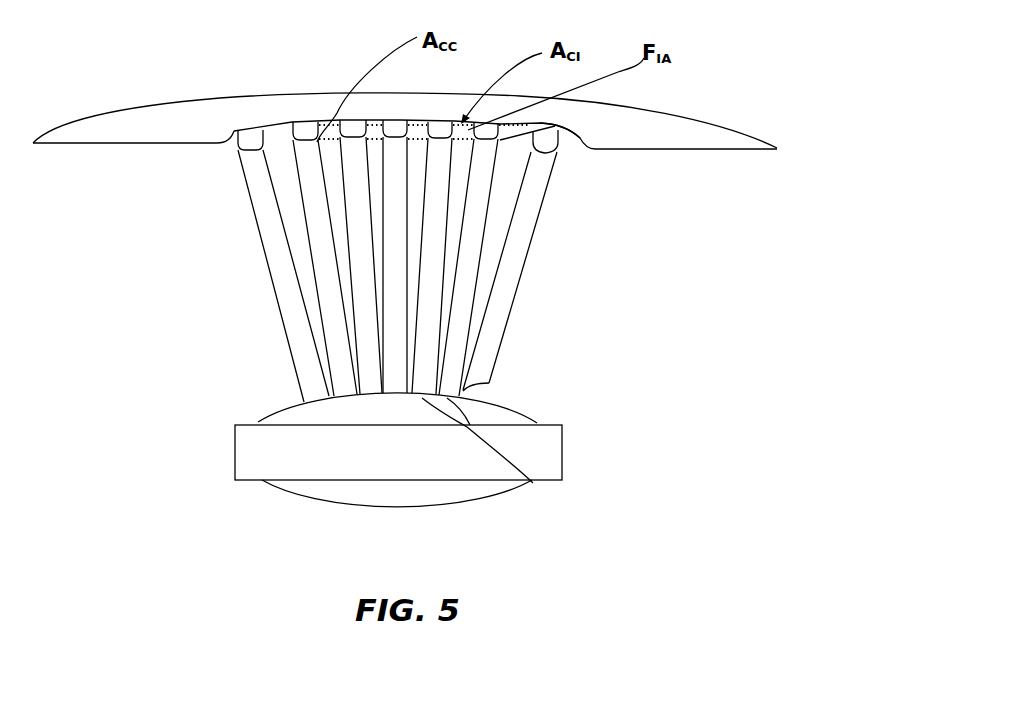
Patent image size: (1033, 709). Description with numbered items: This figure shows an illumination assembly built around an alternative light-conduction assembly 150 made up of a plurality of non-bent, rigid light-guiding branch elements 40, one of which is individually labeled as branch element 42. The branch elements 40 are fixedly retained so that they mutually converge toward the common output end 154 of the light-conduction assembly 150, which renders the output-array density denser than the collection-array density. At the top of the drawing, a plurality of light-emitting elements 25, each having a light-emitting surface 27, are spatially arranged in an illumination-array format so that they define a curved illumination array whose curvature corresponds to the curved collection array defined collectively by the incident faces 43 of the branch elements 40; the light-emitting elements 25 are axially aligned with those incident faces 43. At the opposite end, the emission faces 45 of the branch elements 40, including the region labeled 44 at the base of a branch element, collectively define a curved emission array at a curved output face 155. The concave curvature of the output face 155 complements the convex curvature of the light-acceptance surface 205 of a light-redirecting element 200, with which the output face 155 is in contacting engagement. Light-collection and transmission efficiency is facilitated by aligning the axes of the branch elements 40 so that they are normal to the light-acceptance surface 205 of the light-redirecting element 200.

The light-emitting element 25 is at (247, 143).
The light-emitting surface 27 is at (316, 145).
The light-guiding branch element 40 is at (473, 248).
The light-guiding branch element 42 is at (542, 160).
The incident face 43 is at (560, 151).
The light-guiding branch element 44 is at (473, 387).
The emission face 45 is at (452, 396).
The light-conduction assembly 150 is at (210, 158).
The common output end 154 is at (343, 382).
The curved output face 155 is at (533, 483).
The light-redirecting element 200 is at (417, 467).
The light-acceptance surface 205 is at (258, 425).